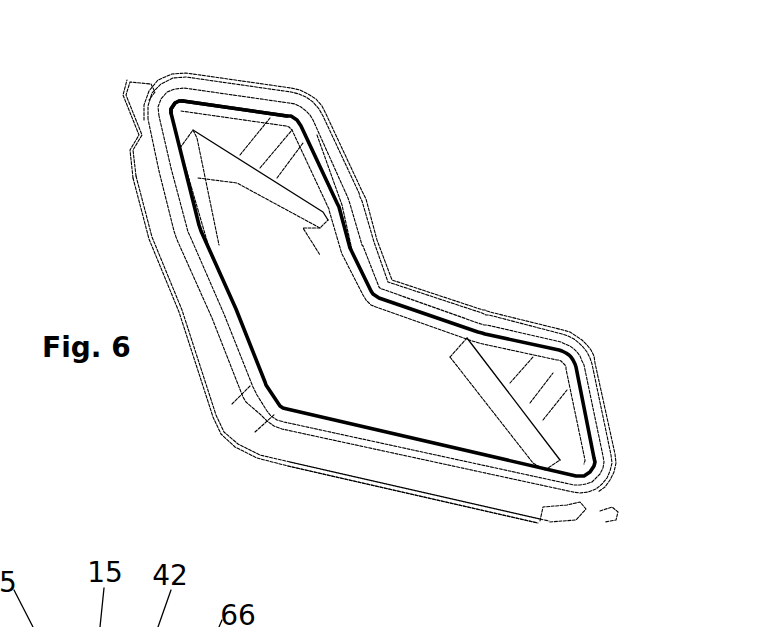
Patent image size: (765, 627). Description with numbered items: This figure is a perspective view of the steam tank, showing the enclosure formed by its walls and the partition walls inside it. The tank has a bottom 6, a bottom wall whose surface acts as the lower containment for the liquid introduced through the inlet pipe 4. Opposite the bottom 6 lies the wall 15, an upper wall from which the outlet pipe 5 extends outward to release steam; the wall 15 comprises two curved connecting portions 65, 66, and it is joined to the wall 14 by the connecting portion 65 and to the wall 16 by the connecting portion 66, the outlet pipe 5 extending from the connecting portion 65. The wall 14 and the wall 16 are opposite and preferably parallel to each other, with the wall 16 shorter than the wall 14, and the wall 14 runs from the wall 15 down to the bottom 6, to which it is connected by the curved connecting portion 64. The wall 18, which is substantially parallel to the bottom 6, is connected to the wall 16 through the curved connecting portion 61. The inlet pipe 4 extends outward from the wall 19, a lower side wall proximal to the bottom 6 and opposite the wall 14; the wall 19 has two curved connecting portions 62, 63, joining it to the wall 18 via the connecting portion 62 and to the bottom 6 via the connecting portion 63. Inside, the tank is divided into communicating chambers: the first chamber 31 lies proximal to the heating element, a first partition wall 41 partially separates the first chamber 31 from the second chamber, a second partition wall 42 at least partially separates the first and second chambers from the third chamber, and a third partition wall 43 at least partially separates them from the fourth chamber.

The inlet pipe 4 is at (607, 515).
The outlet pipe 5 is at (127, 87).
The bottom 6 is at (389, 468).
The wall 14 is at (162, 208).
The wall 15 is at (214, 118).
The wall 16 is at (336, 248).
The wall 18 is at (409, 330).
The wall 19 is at (580, 436).
The first chamber 31 is at (306, 363).
The first partition wall 41 is at (421, 372).
The second partition wall 42 is at (288, 195).
The third partition wall 43 is at (484, 373).
The connecting portion 61 is at (362, 300).
The connecting portion 62 is at (539, 372).
The connecting portion 63 is at (559, 513).
The connecting portion 64 is at (247, 413).
The connecting portion 65 is at (177, 101).
The connecting portion 66 is at (276, 132).